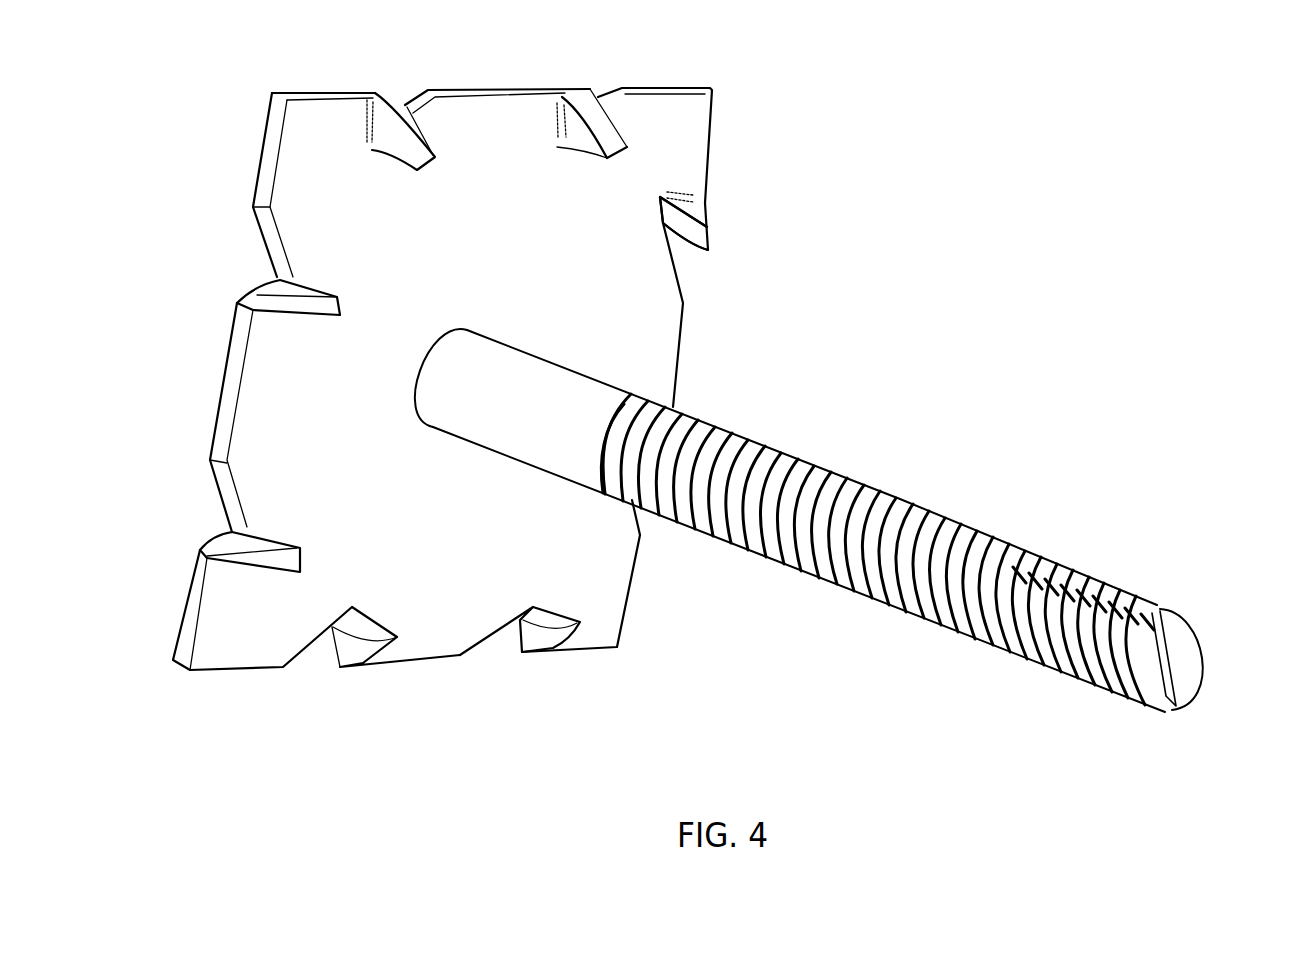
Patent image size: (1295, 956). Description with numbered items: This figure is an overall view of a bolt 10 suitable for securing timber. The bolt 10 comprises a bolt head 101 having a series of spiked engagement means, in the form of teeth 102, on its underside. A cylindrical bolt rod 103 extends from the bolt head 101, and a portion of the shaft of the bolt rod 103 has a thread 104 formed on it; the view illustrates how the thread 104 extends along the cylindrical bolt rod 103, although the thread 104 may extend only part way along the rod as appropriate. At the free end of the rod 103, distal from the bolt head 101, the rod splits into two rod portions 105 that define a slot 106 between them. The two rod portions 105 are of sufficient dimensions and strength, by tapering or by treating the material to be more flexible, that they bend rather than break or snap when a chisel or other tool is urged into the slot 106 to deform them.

The bolt 10 is at (720, 431).
The bolt head 101 is at (502, 261).
The teeth 102 is at (714, 214).
The bolt rod 103 is at (560, 397).
The thread 104 is at (865, 501).
The rod portions 105 is at (1180, 629).
The slot 106 is at (1173, 702).